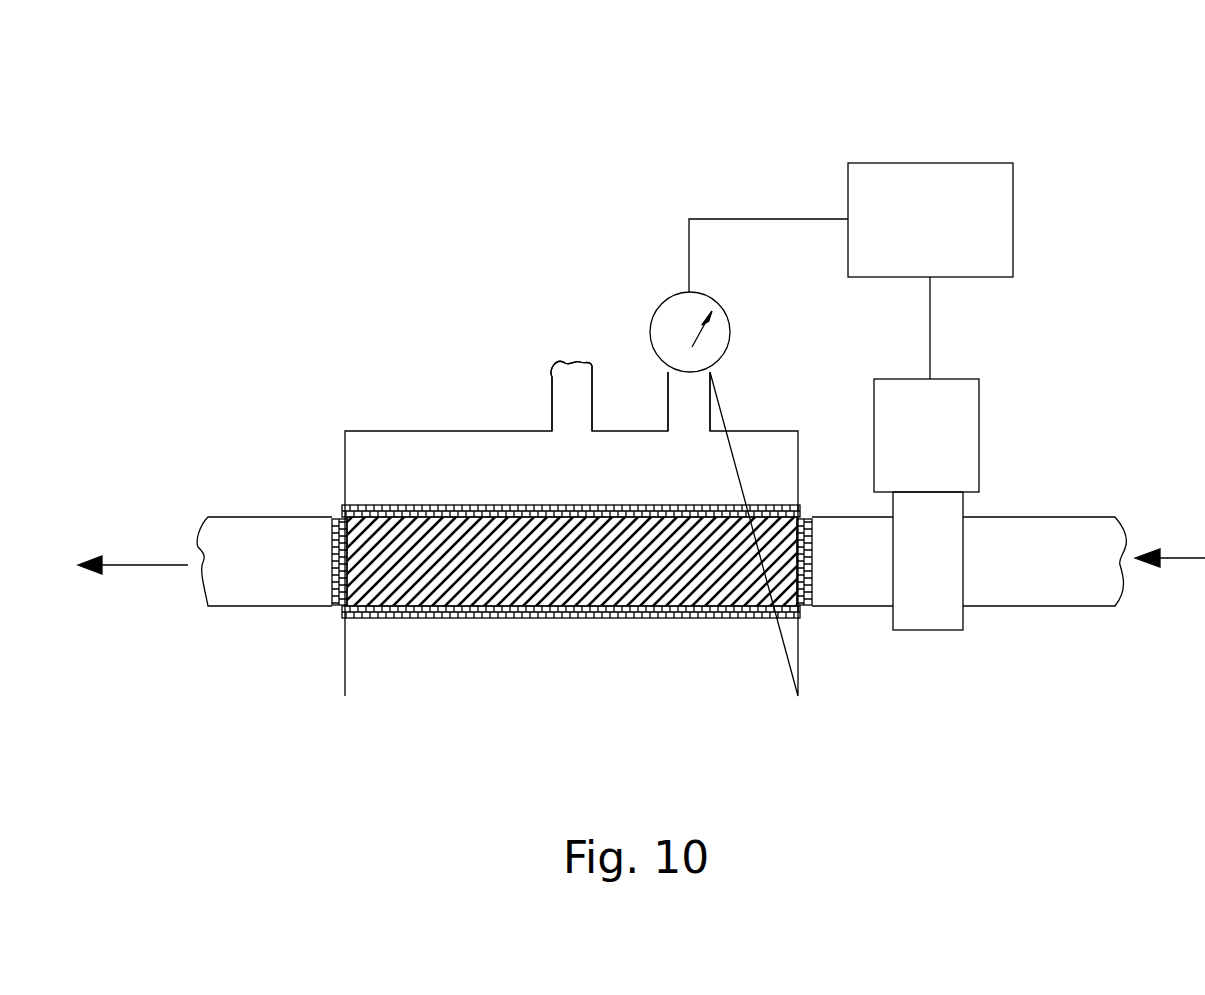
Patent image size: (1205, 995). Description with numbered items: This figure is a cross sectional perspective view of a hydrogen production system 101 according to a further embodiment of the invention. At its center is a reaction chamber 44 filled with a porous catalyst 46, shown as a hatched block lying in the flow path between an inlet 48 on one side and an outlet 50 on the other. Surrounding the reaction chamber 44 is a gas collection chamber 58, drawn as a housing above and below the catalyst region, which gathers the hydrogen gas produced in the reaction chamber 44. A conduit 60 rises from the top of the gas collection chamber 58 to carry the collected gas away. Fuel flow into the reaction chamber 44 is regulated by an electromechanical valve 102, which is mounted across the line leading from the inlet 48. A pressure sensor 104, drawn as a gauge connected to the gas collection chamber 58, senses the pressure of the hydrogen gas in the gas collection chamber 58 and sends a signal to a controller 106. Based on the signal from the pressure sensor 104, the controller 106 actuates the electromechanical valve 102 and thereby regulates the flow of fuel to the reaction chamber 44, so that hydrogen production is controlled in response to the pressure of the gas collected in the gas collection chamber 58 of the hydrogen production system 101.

The hydrogen production system 101 is at (527, 455).
The reaction chamber 44 is at (382, 515).
The porous catalyst 46 is at (437, 590).
The inlet 48 is at (1030, 567).
The outlet 50 is at (263, 545).
The gas collection chamber 58 is at (522, 482).
The conduit 60 is at (552, 380).
The electromechanical valve 102 is at (984, 390).
The pressure sensor 104 is at (663, 302).
The controller 106 is at (985, 162).